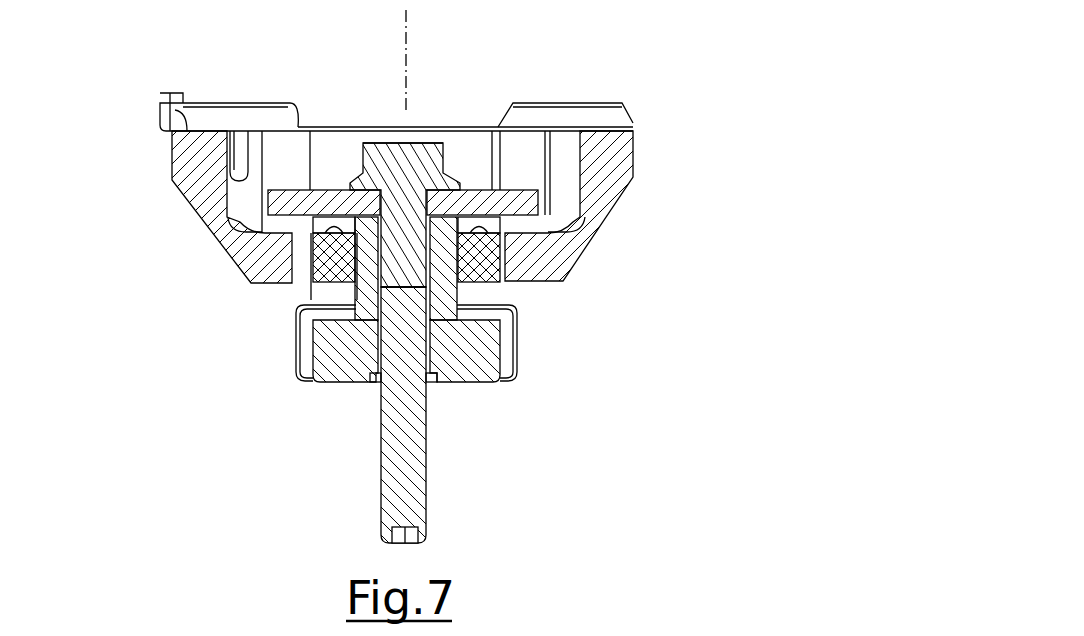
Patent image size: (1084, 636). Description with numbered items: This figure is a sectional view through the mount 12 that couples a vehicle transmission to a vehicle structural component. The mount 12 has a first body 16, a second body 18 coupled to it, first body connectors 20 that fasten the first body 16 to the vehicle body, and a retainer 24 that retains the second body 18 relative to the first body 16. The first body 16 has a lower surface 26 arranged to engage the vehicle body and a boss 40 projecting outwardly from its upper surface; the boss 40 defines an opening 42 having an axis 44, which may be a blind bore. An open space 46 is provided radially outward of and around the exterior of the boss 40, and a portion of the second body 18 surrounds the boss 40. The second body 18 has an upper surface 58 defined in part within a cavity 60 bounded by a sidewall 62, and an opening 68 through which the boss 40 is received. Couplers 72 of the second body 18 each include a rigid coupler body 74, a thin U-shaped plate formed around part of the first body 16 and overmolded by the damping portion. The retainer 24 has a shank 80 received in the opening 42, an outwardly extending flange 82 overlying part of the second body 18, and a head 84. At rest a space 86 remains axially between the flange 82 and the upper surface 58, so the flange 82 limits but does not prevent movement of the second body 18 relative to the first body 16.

The mount 12 is at (702, 31).
The first body 16 is at (312, 388).
The second body 18 is at (649, 150).
The first body connectors 20 is at (410, 432).
The retainer 24 is at (444, 130).
The lower surface 26 is at (476, 385).
The boss 40 is at (443, 262).
The opening 42 is at (382, 243).
The axis 44 is at (411, 37).
The open space 46 is at (338, 268).
The upper surface 58 is at (620, 122).
The cavity 60 is at (274, 148).
The sidewall 62 is at (252, 182).
The opening 68 is at (462, 250).
The couplers 72 is at (534, 330).
The coupler body 74 is at (298, 326).
The shank 80 is at (400, 272).
The flange 82 is at (515, 196).
The head 84 is at (370, 163).
The space 86 is at (305, 222).